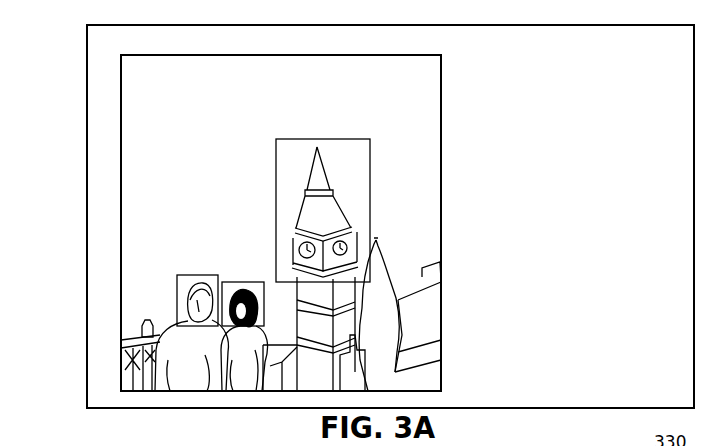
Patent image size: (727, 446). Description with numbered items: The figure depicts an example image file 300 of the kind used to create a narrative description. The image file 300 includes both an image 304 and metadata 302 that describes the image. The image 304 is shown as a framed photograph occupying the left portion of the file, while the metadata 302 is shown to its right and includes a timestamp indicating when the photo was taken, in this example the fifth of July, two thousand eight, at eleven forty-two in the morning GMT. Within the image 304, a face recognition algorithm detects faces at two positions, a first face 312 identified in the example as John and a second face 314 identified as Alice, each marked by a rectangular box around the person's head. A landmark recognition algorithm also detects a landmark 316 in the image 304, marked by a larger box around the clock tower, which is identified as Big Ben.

The image file 300 is at (390, 207).
The metadata 302 is at (603, 83).
The image 304 is at (281, 212).
The face 312 is at (198, 275).
The face 314 is at (234, 282).
The landmark 316 is at (290, 139).